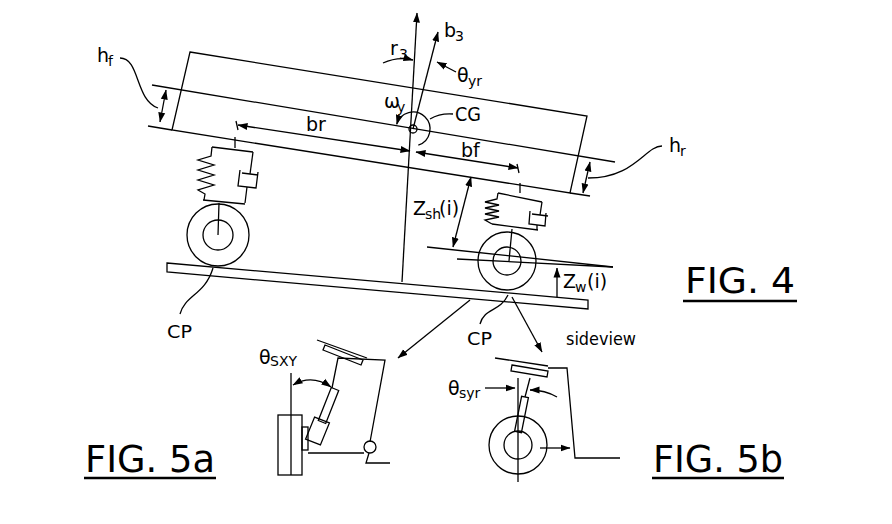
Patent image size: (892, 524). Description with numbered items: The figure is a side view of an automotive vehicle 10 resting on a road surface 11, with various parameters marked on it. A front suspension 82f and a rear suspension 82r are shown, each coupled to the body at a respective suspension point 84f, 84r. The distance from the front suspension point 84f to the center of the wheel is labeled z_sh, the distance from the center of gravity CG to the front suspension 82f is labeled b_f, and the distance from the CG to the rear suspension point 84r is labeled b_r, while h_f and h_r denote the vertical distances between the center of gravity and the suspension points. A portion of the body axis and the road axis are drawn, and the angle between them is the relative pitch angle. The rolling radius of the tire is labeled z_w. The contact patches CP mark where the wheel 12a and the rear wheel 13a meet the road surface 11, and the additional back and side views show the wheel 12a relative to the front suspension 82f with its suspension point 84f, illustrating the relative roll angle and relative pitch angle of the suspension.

In FIG. 4, the automotive vehicle 10 is at (522, 104).
In FIG. 4, the road surface 11 is at (311, 273).
In FIG. 4, the wheel 12a is at (537, 251).
In FIG. 5A, the wheel 12a is at (278, 470).
In FIG. 5B, the wheel 12a is at (500, 463).
In FIG. 4, the rear wheel 13a is at (247, 228).
In FIG. 4, the rear suspension 82r is at (263, 181).
In FIG. 4, the front suspension 82f is at (552, 215).
In FIG. 5A, the front suspension 82f is at (333, 405).
In FIG. 4, the rear suspension point 84r is at (236, 138).
In FIG. 4, the front suspension point 84f is at (520, 186).
In FIG. 5A, the front suspension point 84f is at (352, 350).
In FIG. 5B, the front suspension point 84f is at (548, 366).